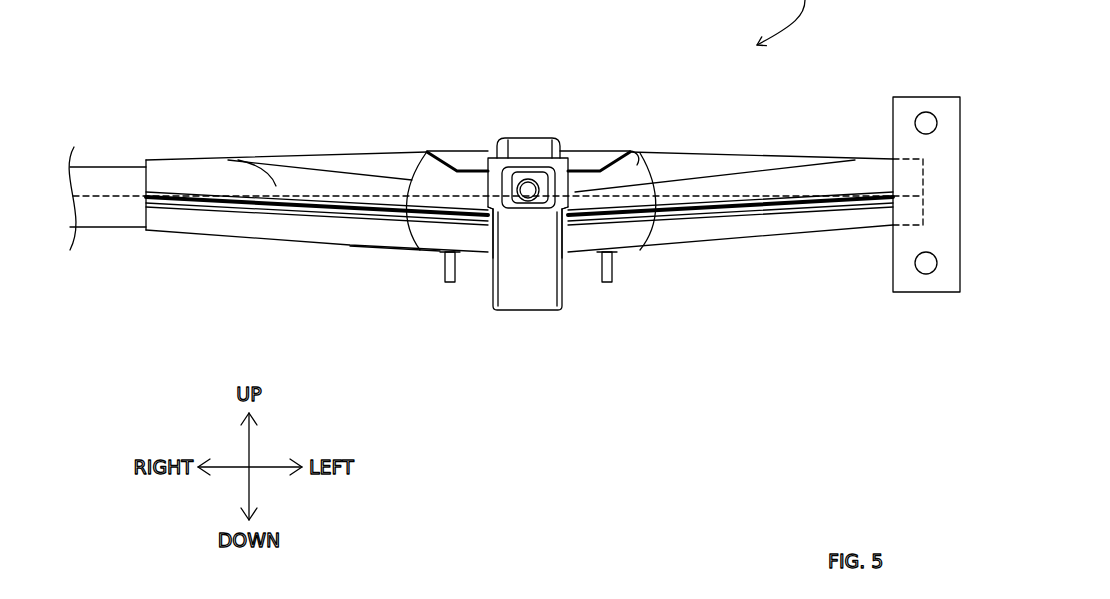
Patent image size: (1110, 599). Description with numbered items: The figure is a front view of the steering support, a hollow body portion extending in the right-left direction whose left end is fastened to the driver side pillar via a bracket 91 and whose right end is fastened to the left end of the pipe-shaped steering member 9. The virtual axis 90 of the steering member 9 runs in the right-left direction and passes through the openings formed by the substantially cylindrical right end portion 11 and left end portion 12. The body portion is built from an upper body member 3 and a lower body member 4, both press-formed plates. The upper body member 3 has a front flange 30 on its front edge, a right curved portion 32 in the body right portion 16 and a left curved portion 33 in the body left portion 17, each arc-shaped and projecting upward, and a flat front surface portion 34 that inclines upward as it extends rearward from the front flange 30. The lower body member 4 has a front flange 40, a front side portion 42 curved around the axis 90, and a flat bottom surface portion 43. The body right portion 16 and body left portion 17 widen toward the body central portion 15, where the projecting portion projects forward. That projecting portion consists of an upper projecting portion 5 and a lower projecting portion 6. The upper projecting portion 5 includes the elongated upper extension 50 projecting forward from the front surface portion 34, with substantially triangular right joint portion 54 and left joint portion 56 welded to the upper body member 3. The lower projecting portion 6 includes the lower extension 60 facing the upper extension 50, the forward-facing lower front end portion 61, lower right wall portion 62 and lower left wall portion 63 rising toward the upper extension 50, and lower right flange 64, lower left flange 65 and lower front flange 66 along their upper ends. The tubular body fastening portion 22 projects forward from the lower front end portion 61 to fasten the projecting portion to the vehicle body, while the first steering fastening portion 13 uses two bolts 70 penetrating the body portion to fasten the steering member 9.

The upper body member 3 is at (380, 97).
The lower body member 4 is at (722, 272).
The upper projecting portion 5 is at (513, 105).
The lower projecting portion 6 is at (507, 335).
The steering member 9 is at (110, 218).
The right end portion 11 is at (160, 210).
The left end portion 12 is at (907, 228).
The first steering fastening portion 13 is at (450, 290).
The body central portion 15 is at (582, 191).
The body right portion 16 is at (305, 137).
The body left portion 17 is at (730, 135).
The body fastening portion 22 is at (532, 180).
The front flange 30 is at (222, 195).
The right curved portion 32 is at (275, 184).
The left curved portion 33 is at (760, 180).
The front surface portion 34 is at (433, 158).
The front flange 40 is at (250, 200).
The front side portion 42 is at (350, 230).
The bottom surface portion 43 is at (385, 252).
The upper extension 50 is at (535, 150).
The right joint portion 54 is at (460, 160).
The left joint portion 56 is at (592, 160).
The lower extension 60 is at (538, 292).
The lower front end portion 61 is at (538, 202).
The lower right wall portion 62 is at (493, 258).
The lower left wall portion 63 is at (565, 255).
The lower right flange 64 is at (488, 234).
The lower left flange 65 is at (568, 233).
The lower front flange 66 is at (500, 172).
The bolt 70 is at (445, 268).
The axis 90 is at (108, 198).
The bracket 91 is at (920, 97).